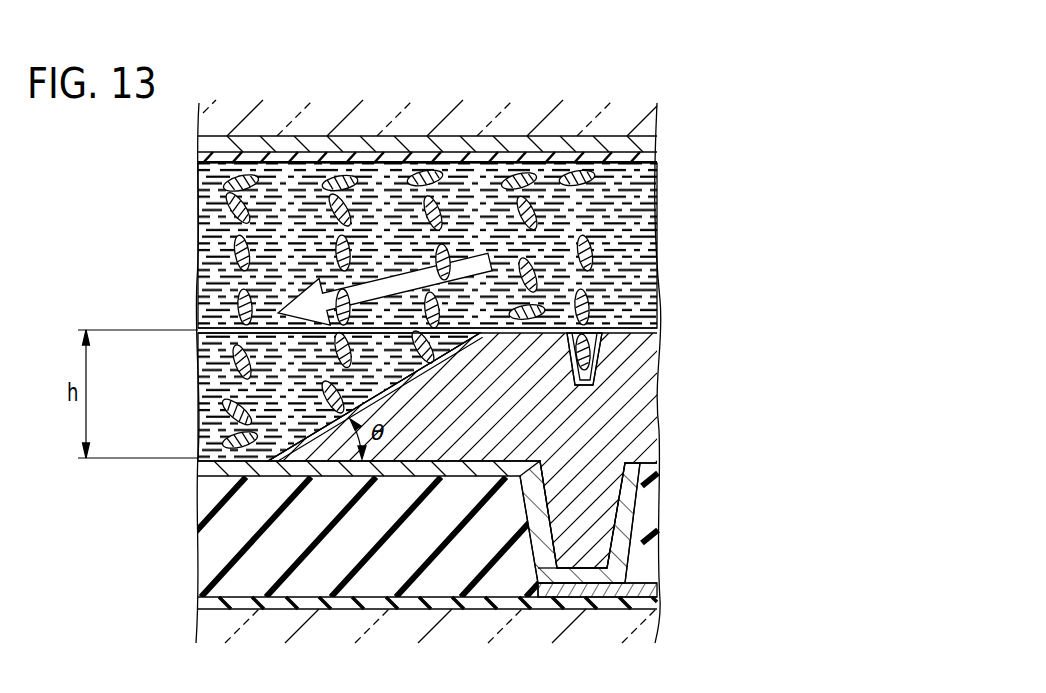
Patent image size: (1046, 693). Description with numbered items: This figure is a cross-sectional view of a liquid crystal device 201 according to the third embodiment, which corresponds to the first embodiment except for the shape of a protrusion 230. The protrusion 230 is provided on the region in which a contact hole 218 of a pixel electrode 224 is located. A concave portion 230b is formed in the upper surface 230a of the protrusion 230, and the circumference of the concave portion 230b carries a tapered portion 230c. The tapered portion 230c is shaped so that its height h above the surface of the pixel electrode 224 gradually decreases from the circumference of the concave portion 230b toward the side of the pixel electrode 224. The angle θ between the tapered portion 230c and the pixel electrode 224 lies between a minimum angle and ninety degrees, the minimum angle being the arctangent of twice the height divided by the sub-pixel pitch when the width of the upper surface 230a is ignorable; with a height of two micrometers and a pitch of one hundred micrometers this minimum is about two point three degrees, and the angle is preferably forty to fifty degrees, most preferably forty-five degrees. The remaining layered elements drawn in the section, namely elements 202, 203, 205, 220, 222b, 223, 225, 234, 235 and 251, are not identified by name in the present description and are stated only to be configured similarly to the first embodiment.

The liquid crystal device 201 is at (662, 82).
The first substrate 202 is at (650, 625).
The second substrate 203 is at (655, 120).
The liquid crystal layer 205 is at (657, 236).
The contact hole 218 is at (540, 568).
The gate insulating layer 220 is at (660, 600).
The pixel electrode 222b is at (658, 588).
The passivation layer 223 is at (645, 523).
The pixel electrode 224 is at (648, 476).
The second alignment layer 225 is at (660, 332).
The protrusion 230 is at (657, 407).
The upper surface 230a is at (660, 323).
The concave portion 230b is at (597, 312).
The tapered portion 230c is at (303, 437).
The color filter 234 is at (652, 146).
The common electrode 235 is at (660, 158).
The liquid crystal molecule 251 is at (524, 182).